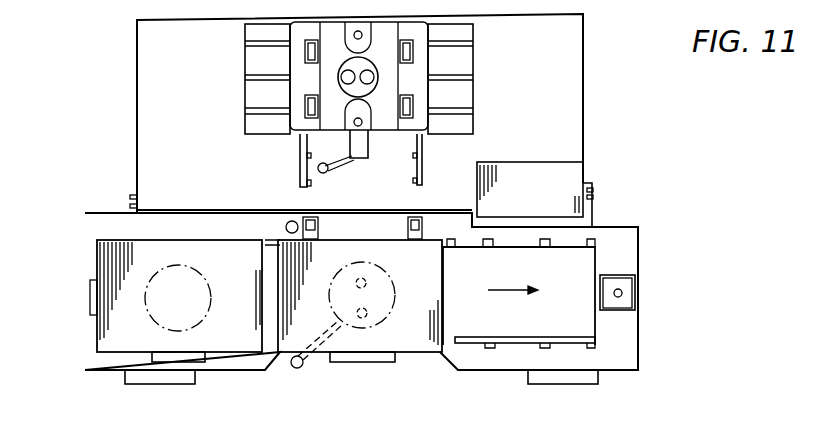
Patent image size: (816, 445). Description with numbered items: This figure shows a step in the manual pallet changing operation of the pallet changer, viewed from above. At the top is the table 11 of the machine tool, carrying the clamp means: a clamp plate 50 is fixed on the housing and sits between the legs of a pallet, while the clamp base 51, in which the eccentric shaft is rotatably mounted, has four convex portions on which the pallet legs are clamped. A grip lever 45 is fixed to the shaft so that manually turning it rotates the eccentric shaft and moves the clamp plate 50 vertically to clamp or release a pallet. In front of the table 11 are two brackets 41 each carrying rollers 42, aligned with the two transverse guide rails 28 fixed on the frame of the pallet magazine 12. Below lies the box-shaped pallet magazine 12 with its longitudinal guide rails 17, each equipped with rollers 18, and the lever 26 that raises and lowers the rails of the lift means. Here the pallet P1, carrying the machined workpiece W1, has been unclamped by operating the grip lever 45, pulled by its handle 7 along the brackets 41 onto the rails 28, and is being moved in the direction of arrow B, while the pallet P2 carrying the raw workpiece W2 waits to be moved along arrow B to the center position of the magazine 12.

The handle 7 is at (357, 362).
The table 11 is at (483, 78).
The pallet magazine 12 is at (638, 216).
The guide rails 17 is at (530, 343).
The rollers 18 is at (497, 349).
The lever 26 is at (298, 367).
The guide rails 28 is at (425, 220).
The brackets 41 is at (300, 147).
The rollers 42 is at (308, 188).
The grip lever 45 is at (328, 173).
The clamp plate 50 is at (327, 33).
The clamp base 51 is at (420, 50).
The machined workpiece W1 is at (380, 322).
The raw workpiece W2 is at (177, 322).
The pallet P1 is at (422, 335).
The pallet P2 is at (112, 332).